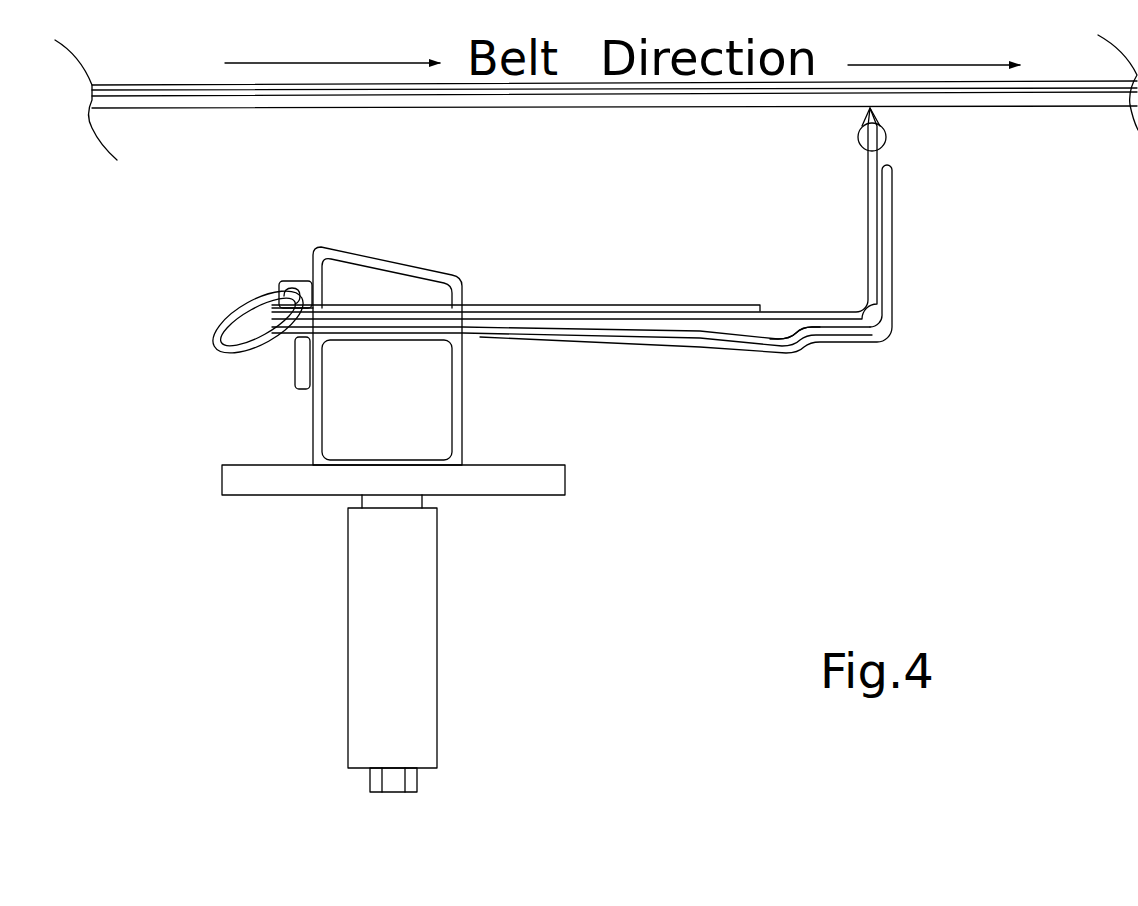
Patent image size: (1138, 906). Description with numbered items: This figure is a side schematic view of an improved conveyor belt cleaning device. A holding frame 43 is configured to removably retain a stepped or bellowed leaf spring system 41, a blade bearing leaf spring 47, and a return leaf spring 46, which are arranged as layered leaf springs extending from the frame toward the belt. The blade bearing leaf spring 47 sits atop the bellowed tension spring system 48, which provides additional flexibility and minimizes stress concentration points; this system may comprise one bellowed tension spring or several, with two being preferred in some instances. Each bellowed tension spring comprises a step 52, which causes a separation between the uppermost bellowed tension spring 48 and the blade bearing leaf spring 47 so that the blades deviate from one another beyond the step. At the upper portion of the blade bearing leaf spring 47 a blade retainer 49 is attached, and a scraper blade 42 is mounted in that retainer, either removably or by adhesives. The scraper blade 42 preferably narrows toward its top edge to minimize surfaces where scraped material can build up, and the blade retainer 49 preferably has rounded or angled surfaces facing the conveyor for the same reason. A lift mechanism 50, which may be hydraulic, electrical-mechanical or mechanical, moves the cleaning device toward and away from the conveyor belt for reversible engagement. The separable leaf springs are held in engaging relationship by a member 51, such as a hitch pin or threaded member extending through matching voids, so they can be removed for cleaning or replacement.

The stepped or bellowed leaf spring system 41 is at (702, 347).
The scraper blade 42 is at (855, 115).
The holding frame 43 is at (468, 413).
The return leaf spring 46 is at (530, 297).
The blade bearing leaf spring 47 is at (840, 308).
The bellowed tension spring system 48 is at (843, 346).
The blade retainer 49 is at (890, 148).
The lift mechanism 50 is at (440, 672).
The member 51 is at (268, 277).
The step 52 is at (808, 337).